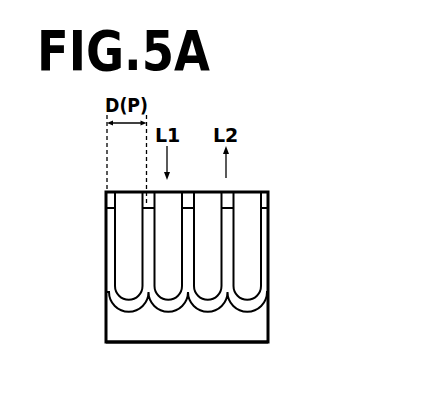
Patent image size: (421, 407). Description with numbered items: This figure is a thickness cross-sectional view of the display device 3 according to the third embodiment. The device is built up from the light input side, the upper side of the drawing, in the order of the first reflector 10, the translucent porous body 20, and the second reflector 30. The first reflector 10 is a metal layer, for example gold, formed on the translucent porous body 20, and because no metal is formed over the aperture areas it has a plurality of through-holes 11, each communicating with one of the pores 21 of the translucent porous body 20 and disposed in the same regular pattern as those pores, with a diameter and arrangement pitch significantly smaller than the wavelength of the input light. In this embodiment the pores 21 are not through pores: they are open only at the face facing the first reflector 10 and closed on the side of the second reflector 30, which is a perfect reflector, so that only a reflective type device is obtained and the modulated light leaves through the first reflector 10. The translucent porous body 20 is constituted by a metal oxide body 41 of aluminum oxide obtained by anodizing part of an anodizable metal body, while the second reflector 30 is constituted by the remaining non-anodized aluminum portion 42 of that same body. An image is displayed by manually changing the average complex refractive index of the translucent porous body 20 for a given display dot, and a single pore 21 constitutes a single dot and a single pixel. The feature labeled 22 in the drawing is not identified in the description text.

The display device 3 is at (294, 169).
The first reflector 10 is at (273, 197).
The through-hole 11 is at (116, 201).
The translucent porous body 20 is at (242, 260).
The metal oxide body 41 is at (273, 247).
The pore 21 is at (236, 267).
The groove / channel of second layer 22 is at (121, 255).
The second reflector 30 is at (242, 321).
The non-anodized portion 42 is at (273, 316).